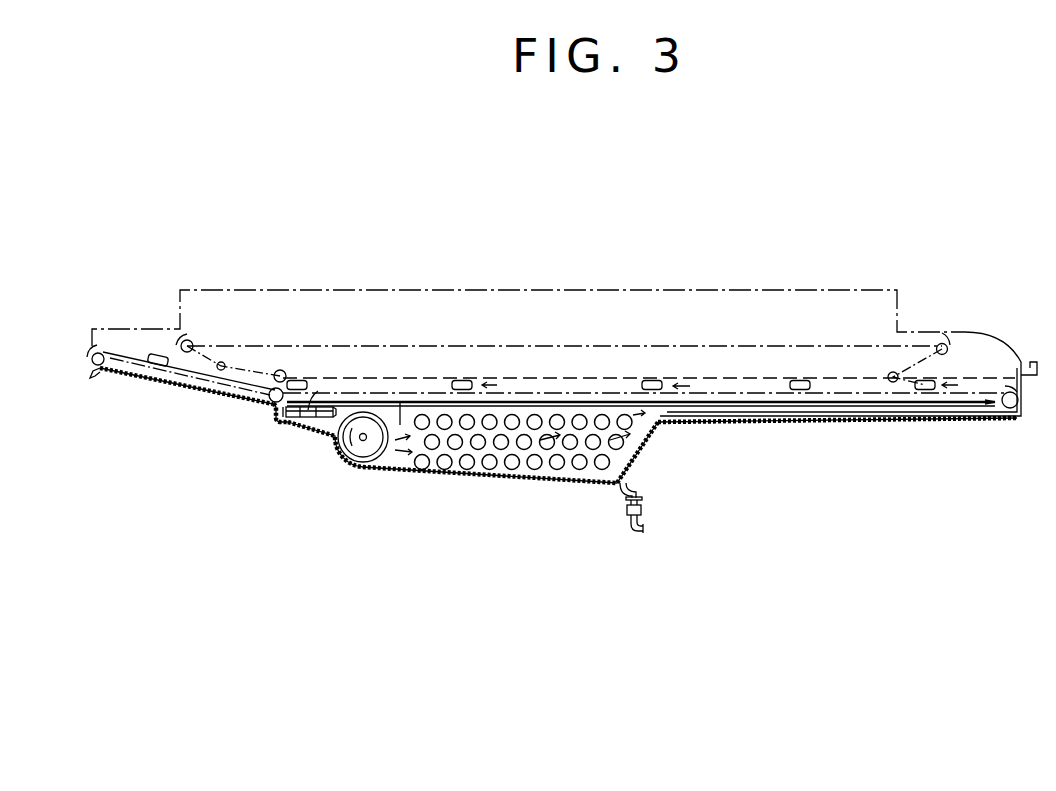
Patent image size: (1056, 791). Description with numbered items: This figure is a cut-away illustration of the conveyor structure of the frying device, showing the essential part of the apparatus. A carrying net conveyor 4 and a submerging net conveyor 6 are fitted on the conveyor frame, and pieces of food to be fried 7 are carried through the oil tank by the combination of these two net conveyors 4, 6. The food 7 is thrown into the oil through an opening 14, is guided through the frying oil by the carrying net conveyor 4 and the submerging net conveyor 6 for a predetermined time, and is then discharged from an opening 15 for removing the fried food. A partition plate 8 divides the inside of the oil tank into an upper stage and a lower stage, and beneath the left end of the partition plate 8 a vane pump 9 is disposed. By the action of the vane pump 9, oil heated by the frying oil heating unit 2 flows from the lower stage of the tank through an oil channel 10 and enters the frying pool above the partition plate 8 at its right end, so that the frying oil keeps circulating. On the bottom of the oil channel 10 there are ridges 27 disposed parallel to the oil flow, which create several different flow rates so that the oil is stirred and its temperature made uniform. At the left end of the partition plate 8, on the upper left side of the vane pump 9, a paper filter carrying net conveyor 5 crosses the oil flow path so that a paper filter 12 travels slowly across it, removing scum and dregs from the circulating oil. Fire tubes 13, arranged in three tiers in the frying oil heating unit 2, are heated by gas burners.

The frying oil heating unit 2 is at (503, 471).
The carrying net conveyor 4 is at (967, 388).
The paper filter carrying net conveyor 5 is at (291, 424).
The submerging net conveyor 6 is at (745, 346).
The pieces of food to be fried 7 is at (156, 355).
The partition plate 8 is at (644, 412).
The vane pump 9 is at (363, 455).
The oil channel 10 is at (895, 407).
The paper filter 12 is at (272, 409).
The fire tubes 13 is at (446, 468).
The opening 14 is at (993, 362).
The opening for removing the fried food 15 is at (117, 338).
The ridges 27 is at (744, 424).